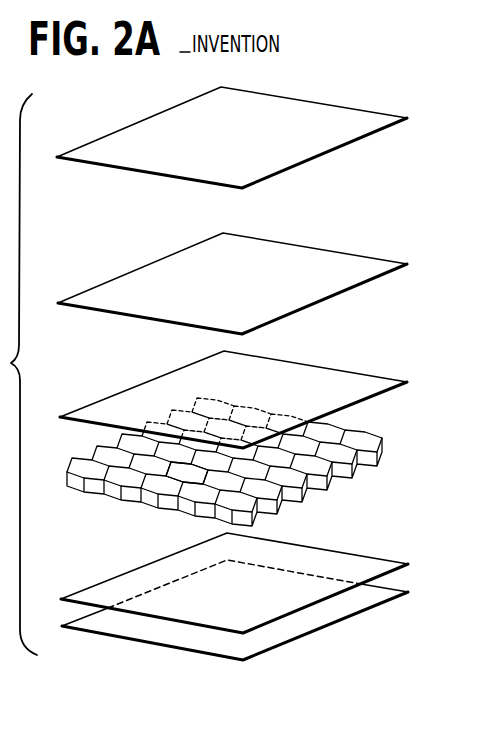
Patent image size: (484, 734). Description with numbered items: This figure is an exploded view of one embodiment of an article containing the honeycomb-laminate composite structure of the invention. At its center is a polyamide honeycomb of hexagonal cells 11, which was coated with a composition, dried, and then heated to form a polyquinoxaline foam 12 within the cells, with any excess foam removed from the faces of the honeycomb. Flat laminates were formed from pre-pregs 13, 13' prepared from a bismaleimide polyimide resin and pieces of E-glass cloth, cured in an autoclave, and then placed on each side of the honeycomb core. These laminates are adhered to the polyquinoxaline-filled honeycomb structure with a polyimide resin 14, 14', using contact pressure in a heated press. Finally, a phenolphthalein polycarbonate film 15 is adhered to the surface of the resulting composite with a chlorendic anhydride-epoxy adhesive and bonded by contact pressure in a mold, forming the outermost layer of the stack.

The phenolphthalein polycarbonate film 15 is at (94, 140).
The pre-preg 13 is at (232, 283).
The polyimide resin 14 is at (233, 399).
The polyamide honeycomb of hexagonal cells 11 is at (98, 491).
The polyquinoxaline foam 12 is at (197, 467).
The polyimide resin 14' is at (234, 583).
The pre-preg 13' is at (235, 622).